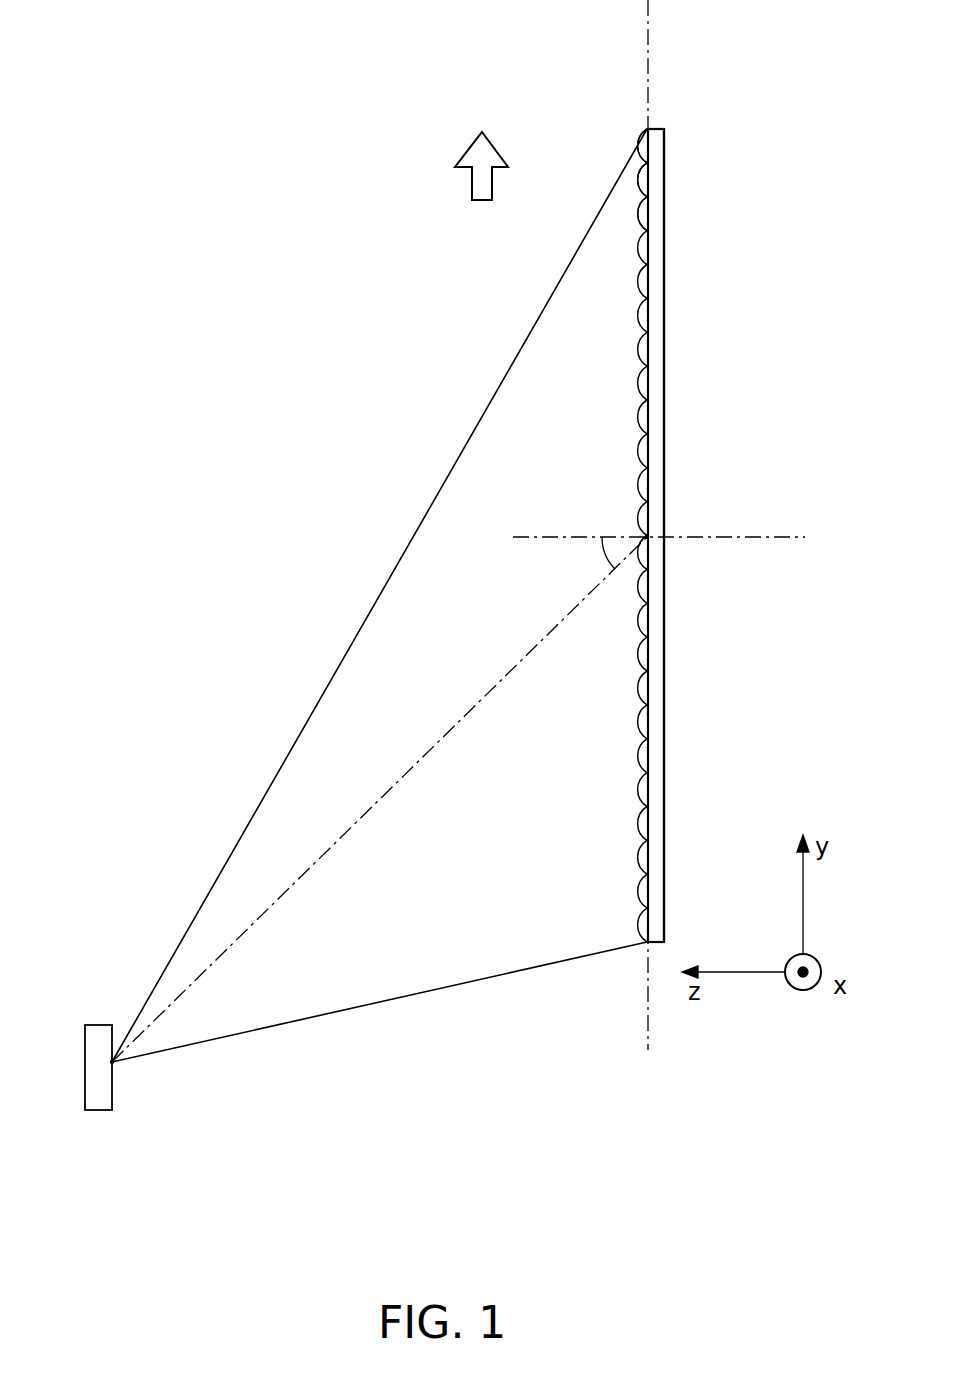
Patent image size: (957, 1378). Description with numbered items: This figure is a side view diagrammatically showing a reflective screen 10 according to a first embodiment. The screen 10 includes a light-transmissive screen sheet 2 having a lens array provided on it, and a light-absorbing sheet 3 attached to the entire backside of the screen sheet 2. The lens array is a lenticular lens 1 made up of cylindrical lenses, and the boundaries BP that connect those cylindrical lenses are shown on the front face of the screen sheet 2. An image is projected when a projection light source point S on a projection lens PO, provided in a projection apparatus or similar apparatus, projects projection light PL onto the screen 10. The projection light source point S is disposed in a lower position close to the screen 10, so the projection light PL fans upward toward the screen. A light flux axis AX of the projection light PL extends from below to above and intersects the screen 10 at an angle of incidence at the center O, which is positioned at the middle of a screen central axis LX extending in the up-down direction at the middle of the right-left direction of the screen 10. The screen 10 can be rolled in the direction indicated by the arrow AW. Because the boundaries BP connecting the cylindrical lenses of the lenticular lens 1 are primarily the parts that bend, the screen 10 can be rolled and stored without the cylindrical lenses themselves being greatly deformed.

The lenticular lens 1 is at (642, 143).
The screen sheet 2 is at (653, 128).
The light-absorbing sheet 3 is at (665, 216).
The screen 10 is at (684, 112).
The boundaries BP is at (643, 232).
The screen central axis LX is at (652, 13).
The light flux axis AX is at (380, 793).
The center O is at (645, 535).
The projection light PL is at (200, 913).
The projection light source point S is at (112, 1063).
The projection lens PO is at (95, 1110).
The arrow AW is at (468, 187).